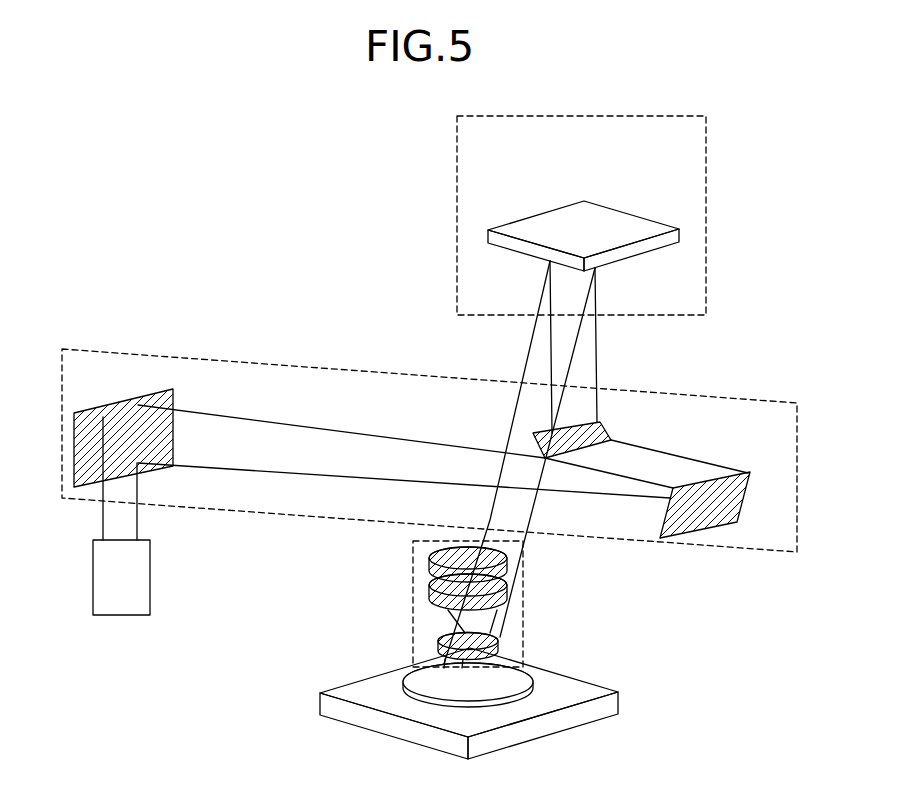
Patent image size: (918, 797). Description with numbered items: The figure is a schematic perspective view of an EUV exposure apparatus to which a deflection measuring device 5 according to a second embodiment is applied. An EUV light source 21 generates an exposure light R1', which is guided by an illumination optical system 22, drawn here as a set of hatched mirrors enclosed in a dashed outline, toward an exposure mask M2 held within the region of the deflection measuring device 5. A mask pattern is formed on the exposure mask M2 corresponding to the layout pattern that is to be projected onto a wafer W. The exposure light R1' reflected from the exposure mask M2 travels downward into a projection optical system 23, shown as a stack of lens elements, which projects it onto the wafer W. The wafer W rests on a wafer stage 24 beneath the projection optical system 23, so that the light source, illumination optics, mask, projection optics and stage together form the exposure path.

The deflection measuring device 5 is at (706, 194).
The exposure mask M2 is at (562, 207).
The illumination optical system 22 is at (290, 364).
The EUV light source 21 is at (93, 573).
The exposure light R1' is at (180, 512).
The projection optical system 23 is at (413, 574).
The wafer W is at (403, 690).
The wafer stage 24 is at (320, 702).